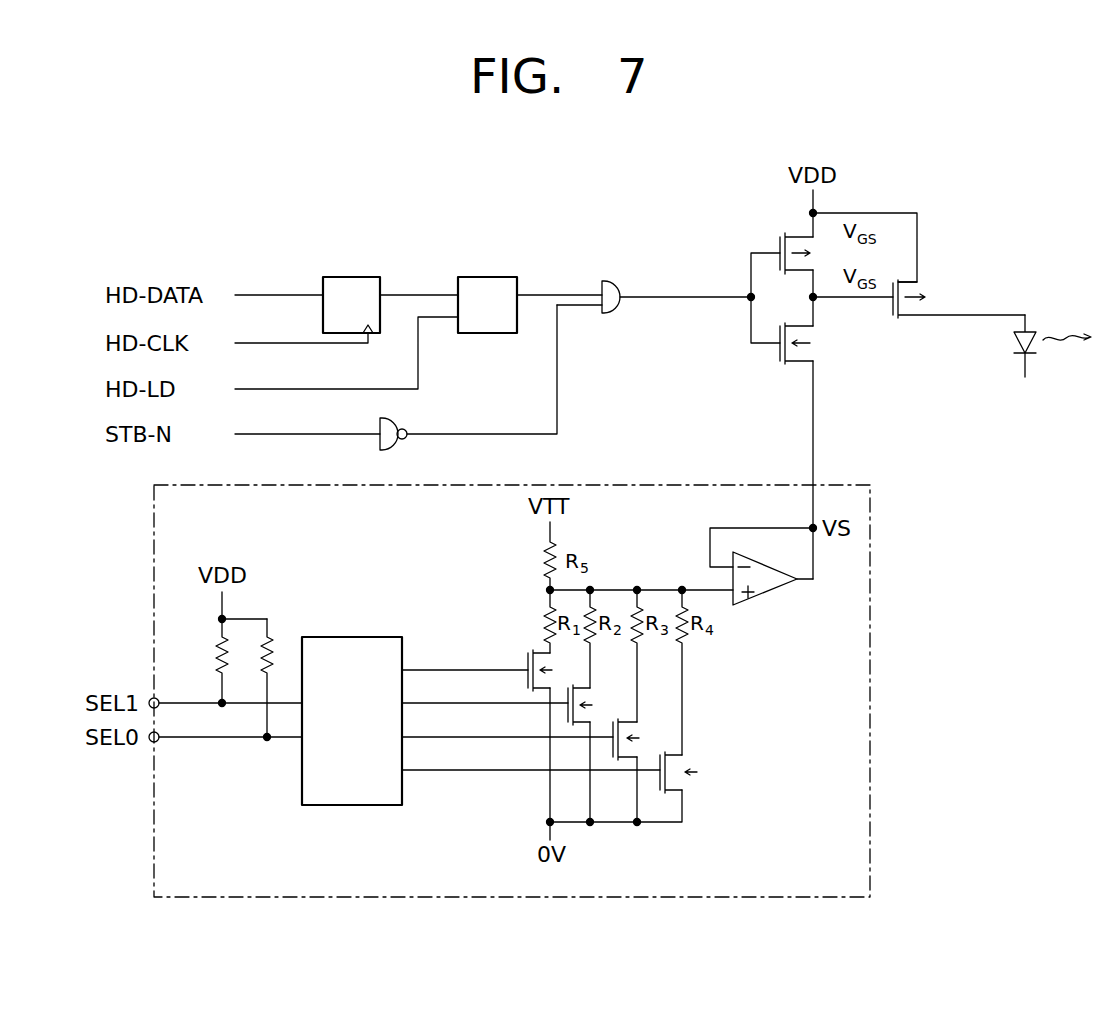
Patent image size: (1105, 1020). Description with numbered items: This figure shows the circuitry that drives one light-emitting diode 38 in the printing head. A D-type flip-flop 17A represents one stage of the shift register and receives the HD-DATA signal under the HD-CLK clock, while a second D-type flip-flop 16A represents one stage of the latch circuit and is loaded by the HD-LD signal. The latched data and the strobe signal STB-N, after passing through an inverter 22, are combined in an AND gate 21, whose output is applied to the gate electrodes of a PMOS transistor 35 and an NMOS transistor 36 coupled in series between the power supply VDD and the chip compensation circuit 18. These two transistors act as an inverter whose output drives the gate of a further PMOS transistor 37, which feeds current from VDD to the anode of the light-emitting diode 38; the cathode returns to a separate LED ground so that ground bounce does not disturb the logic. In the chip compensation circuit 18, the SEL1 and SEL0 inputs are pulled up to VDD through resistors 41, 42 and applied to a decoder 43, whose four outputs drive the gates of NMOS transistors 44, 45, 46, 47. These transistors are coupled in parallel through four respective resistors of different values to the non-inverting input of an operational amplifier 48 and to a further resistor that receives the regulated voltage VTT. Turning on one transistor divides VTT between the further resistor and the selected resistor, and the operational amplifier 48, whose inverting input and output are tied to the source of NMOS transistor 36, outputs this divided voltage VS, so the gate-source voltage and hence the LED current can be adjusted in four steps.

The D-type flip-flop 17A is at (349, 277).
The D-type flip-flop 16A is at (485, 277).
The AND gate 21 is at (616, 285).
The inverter 22 is at (399, 421).
The PMOS transistor 35 is at (779, 248).
The NMOS transistor 36 is at (779, 350).
The PMOS transistor 37 is at (892, 307).
The light-emitting diode 38 is at (1012, 340).
The chip compensation circuit 18 is at (840, 444).
The resistor 41 is at (226, 617).
The resistor 42 is at (268, 634).
The decoder 43 is at (376, 637).
The NMOS transistor 44 is at (527, 661).
The NMOS transistor 45 is at (567, 719).
The NMOS transistor 46 is at (612, 745).
The NMOS transistor 47 is at (699, 770).
The operational amplifier 48 is at (778, 595).